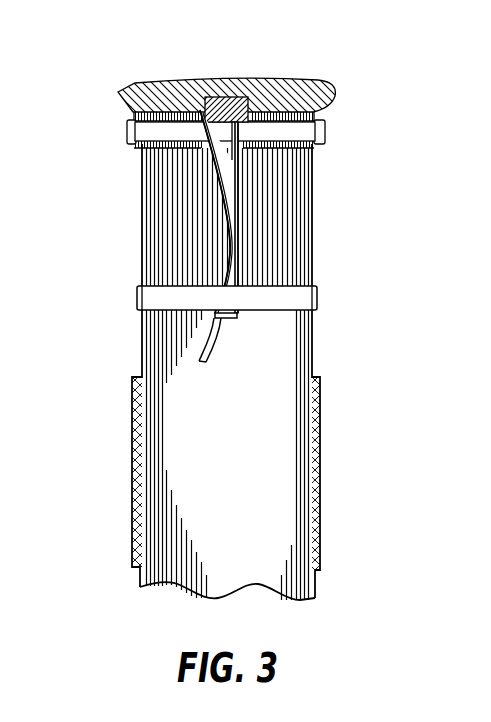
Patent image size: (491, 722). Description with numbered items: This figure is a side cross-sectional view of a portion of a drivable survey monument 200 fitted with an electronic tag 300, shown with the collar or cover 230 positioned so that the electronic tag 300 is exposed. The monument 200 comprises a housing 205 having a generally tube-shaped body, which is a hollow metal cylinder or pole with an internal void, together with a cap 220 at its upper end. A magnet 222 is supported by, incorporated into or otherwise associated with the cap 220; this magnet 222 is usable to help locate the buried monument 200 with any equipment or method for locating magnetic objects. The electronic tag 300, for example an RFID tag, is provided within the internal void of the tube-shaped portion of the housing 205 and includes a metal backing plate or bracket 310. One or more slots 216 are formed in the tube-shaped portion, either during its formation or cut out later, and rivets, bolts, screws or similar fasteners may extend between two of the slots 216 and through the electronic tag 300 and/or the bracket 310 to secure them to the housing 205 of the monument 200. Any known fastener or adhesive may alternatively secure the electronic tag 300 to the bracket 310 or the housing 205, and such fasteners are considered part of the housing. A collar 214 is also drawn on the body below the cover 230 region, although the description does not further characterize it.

The monument 200 is at (350, 75).
The housing 205 is at (352, 114).
The collar 214 is at (272, 287).
The slots 216 is at (142, 214).
The cap 220 is at (153, 81).
The magnet 222 is at (236, 97).
The cover 230 is at (0, 367).
The electronic tag 300 is at (243, 200).
The bracket 310 is at (212, 229).